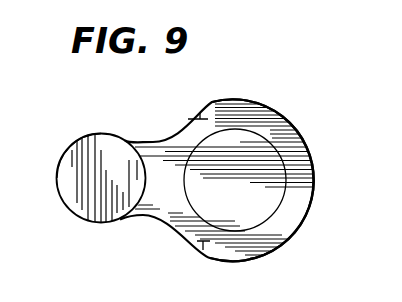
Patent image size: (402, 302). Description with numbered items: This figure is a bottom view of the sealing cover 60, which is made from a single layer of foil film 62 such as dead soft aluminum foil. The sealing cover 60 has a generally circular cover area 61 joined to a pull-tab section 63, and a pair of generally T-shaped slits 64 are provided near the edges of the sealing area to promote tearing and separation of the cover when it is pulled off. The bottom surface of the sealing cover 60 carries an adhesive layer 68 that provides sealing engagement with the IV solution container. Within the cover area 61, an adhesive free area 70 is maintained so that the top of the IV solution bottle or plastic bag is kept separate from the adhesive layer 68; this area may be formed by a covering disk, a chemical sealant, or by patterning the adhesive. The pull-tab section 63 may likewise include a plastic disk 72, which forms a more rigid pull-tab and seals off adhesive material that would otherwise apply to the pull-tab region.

The sealing cover 60 is at (278, 89).
The cover area 61 is at (108, 250).
The foil film 62 is at (298, 131).
The pull-tab section 63 is at (248, 293).
The T-shaped slits 64 is at (197, 114).
The adhesive layer 68 is at (288, 229).
The adhesive free area 70 is at (240, 147).
The plastic disk 72 is at (72, 208).